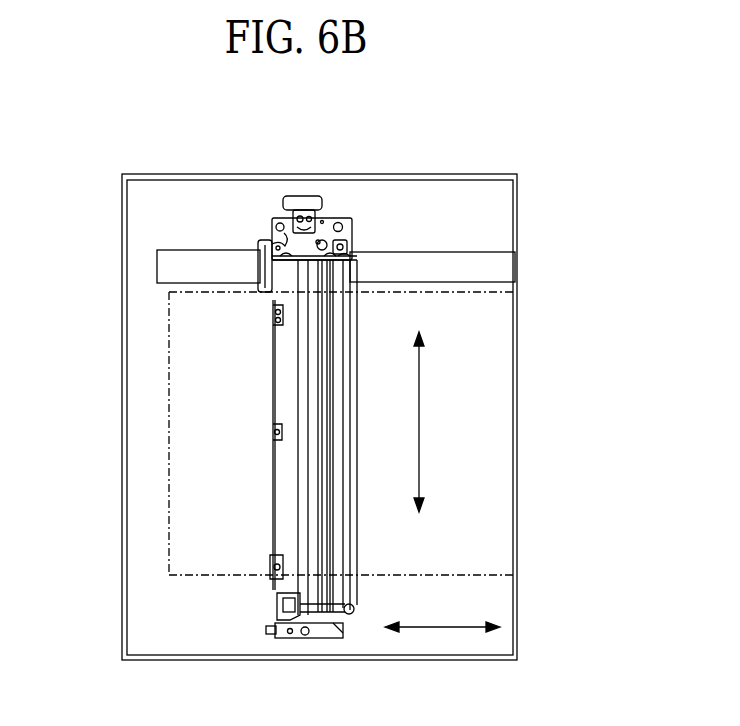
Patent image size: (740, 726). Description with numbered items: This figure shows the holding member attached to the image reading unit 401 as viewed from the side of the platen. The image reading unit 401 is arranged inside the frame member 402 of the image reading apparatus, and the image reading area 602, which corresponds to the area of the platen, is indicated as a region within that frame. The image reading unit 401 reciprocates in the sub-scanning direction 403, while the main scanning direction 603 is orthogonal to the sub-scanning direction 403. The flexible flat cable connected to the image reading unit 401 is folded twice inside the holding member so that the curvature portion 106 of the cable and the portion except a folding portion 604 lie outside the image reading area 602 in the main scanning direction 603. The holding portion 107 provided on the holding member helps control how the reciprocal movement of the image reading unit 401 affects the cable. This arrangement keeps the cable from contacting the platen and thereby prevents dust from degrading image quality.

The curvature portion 106 is at (184, 253).
The holding portion 107 is at (261, 257).
The image reading unit 401 is at (270, 585).
The frame member 402 is at (122, 483).
The sub-scanning direction 403 is at (444, 627).
The image reading area 602 is at (169, 382).
The main scanning direction 603 is at (419, 425).
The portion except a folding portion 604 is at (424, 259).